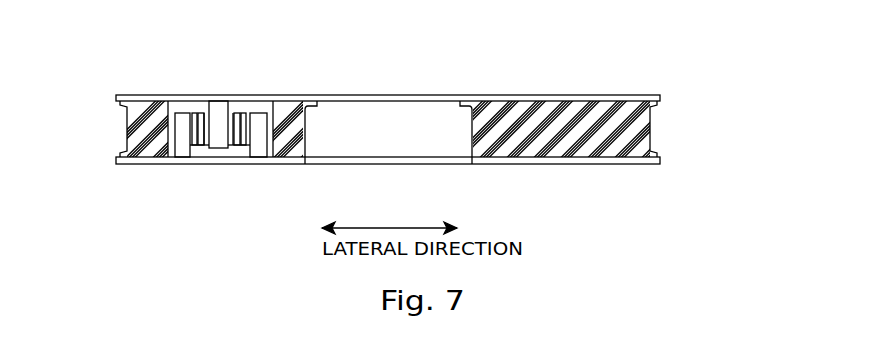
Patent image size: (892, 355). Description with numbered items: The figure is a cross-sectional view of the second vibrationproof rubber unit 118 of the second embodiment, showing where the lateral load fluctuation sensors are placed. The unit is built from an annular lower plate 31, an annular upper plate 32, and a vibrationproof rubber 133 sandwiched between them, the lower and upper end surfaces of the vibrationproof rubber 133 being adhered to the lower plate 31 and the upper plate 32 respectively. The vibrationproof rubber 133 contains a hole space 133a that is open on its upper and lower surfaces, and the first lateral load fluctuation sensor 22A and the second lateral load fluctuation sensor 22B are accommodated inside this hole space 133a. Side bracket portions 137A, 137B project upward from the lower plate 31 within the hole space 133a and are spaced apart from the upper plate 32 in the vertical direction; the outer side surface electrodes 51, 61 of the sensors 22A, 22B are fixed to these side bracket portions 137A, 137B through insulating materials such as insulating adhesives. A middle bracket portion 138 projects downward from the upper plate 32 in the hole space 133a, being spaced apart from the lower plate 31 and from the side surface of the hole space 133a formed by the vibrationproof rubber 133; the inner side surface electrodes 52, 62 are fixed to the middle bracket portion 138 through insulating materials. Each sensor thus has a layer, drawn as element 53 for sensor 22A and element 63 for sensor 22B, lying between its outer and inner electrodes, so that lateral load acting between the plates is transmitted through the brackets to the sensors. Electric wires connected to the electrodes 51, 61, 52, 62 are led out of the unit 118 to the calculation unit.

The second vibrationproof rubber unit 118 is at (762, 73).
The upper plate 32 is at (652, 98).
The lower plate 31 is at (652, 162).
The vibrationproof rubber 133 is at (628, 128).
The hole space 133a is at (170, 135).
The side bracket portion 137A is at (180, 122).
The side bracket portion 137B is at (257, 122).
The middle bracket portion 138 is at (219, 120).
The first lateral load fluctuation sensor 22A is at (175, 193).
The second lateral load fluctuation sensor 22B is at (267, 193).
The outer side surface electrode 51 is at (193, 145).
The piezoelectric layer 53 is at (199, 145).
The inner side surface electrode 52 is at (204, 145).
The inner side surface electrode 62 is at (233, 145).
The piezoelectric layer 63 is at (239, 145).
The outer side surface electrode 61 is at (244, 145).